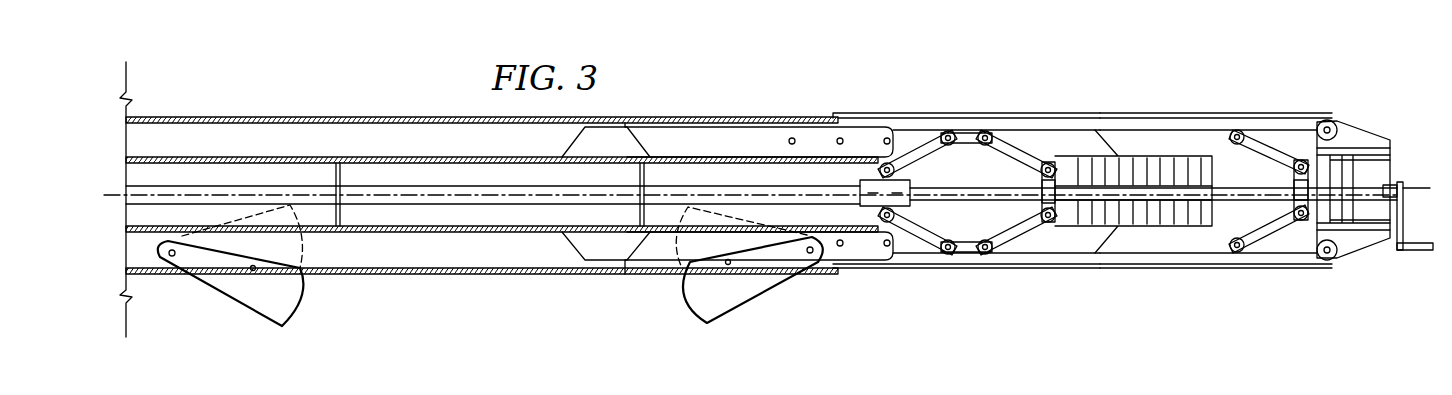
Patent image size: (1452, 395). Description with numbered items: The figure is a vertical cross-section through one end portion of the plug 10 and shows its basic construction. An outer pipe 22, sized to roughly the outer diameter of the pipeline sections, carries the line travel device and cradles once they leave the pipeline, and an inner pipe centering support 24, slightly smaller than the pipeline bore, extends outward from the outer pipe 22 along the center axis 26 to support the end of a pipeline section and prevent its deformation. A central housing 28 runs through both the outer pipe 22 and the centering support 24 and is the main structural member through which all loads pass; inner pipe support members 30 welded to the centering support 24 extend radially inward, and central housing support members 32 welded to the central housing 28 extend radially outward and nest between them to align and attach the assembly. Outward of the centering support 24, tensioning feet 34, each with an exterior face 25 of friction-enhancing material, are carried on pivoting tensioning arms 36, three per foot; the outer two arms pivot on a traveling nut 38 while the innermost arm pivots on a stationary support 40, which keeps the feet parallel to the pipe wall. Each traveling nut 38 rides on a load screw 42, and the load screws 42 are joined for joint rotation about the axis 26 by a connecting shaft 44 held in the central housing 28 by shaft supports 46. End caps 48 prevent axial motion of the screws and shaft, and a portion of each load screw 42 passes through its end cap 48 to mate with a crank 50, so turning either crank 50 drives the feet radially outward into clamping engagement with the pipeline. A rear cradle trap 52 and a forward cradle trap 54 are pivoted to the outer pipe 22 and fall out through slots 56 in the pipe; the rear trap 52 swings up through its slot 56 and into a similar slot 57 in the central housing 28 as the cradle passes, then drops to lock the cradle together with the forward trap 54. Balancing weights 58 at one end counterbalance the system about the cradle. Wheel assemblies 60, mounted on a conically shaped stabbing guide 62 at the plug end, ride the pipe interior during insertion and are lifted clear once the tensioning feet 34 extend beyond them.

The plug 10 is at (288, 90).
The outer pipe 22 is at (395, 117).
The inner pipe centering support 24 is at (838, 118).
The exterior face 25 is at (1210, 113).
The center axis 26 is at (1413, 193).
The central housing 28 is at (487, 232).
The inner pipe support member 30 is at (725, 127).
The central housing support member 32 is at (580, 137).
The tensioning foot 34 is at (1140, 113).
The tensioning arm 36 is at (925, 133).
The traveling nut 38 is at (1040, 205).
The stationary support 40 is at (915, 185).
The load screw 42 is at (1260, 186).
The connecting shaft 44 is at (523, 207).
The shaft support 46 is at (343, 217).
The end cap 48 is at (1373, 172).
The crank 50 is at (1410, 252).
The rear cradle trap 52 is at (300, 307).
The forward cradle trap 54 is at (752, 303).
The slot 56 is at (307, 270).
The slot 57 is at (300, 240).
The balancing weight 58 is at (1100, 160).
The wheel assembly 60 is at (1333, 121).
The stabbing guide 62 is at (1372, 130).